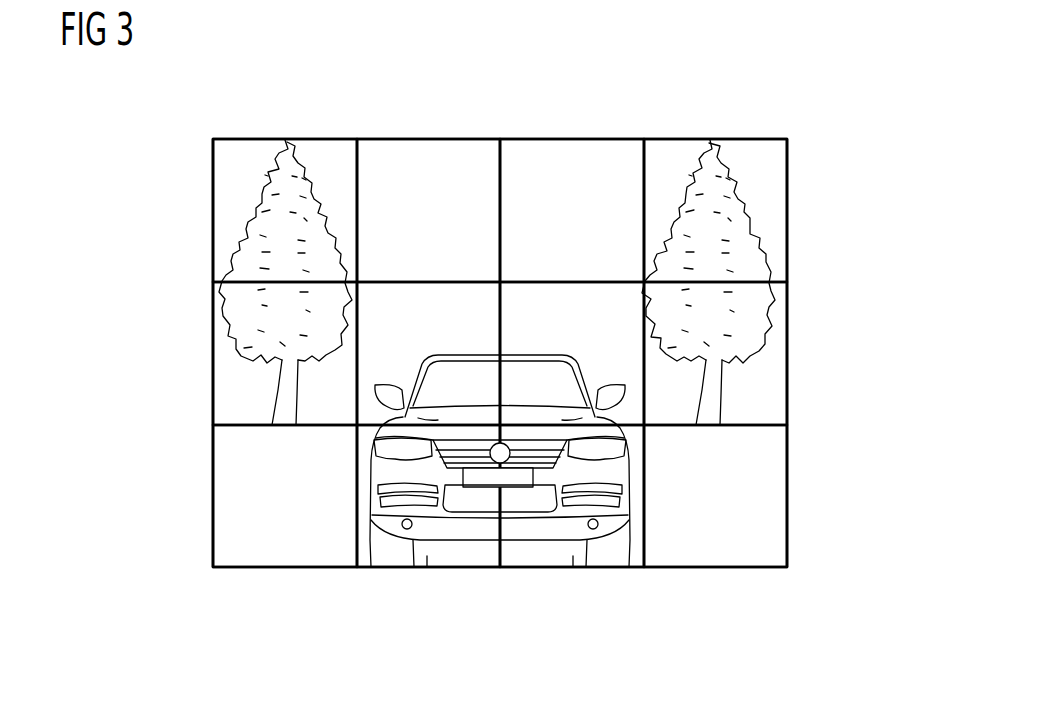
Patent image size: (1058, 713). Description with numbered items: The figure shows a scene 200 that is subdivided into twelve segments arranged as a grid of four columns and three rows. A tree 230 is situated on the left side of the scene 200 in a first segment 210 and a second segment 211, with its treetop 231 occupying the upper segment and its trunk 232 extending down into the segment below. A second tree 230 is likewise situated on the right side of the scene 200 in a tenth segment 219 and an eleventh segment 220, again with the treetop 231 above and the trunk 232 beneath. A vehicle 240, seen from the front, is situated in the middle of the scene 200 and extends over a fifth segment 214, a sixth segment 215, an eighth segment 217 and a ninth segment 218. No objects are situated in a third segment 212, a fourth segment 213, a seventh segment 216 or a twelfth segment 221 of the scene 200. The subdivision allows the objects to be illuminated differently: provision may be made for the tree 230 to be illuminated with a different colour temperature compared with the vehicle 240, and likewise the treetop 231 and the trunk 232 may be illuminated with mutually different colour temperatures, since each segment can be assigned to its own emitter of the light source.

The scene 200 is at (575, 307).
The first segment 210 is at (253, 210).
The second segment 211 is at (253, 353).
The third segment 212 is at (253, 496).
The fourth segment 213 is at (428, 183).
The fifth segment 214 is at (428, 327).
The sixth segment 215 is at (428, 524).
The seventh segment 216 is at (572, 183).
The eighth segment 217 is at (572, 327).
The ninth segment 218 is at (572, 524).
The tenth segment 219 is at (748, 210).
The eleventh segment 220 is at (748, 353).
The twelfth segment 221 is at (748, 496).
The tree 230 is at (497, 224).
The treetop 231 is at (497, 251).
The trunk 232 is at (500, 392).
The vehicle 240 is at (533, 461).